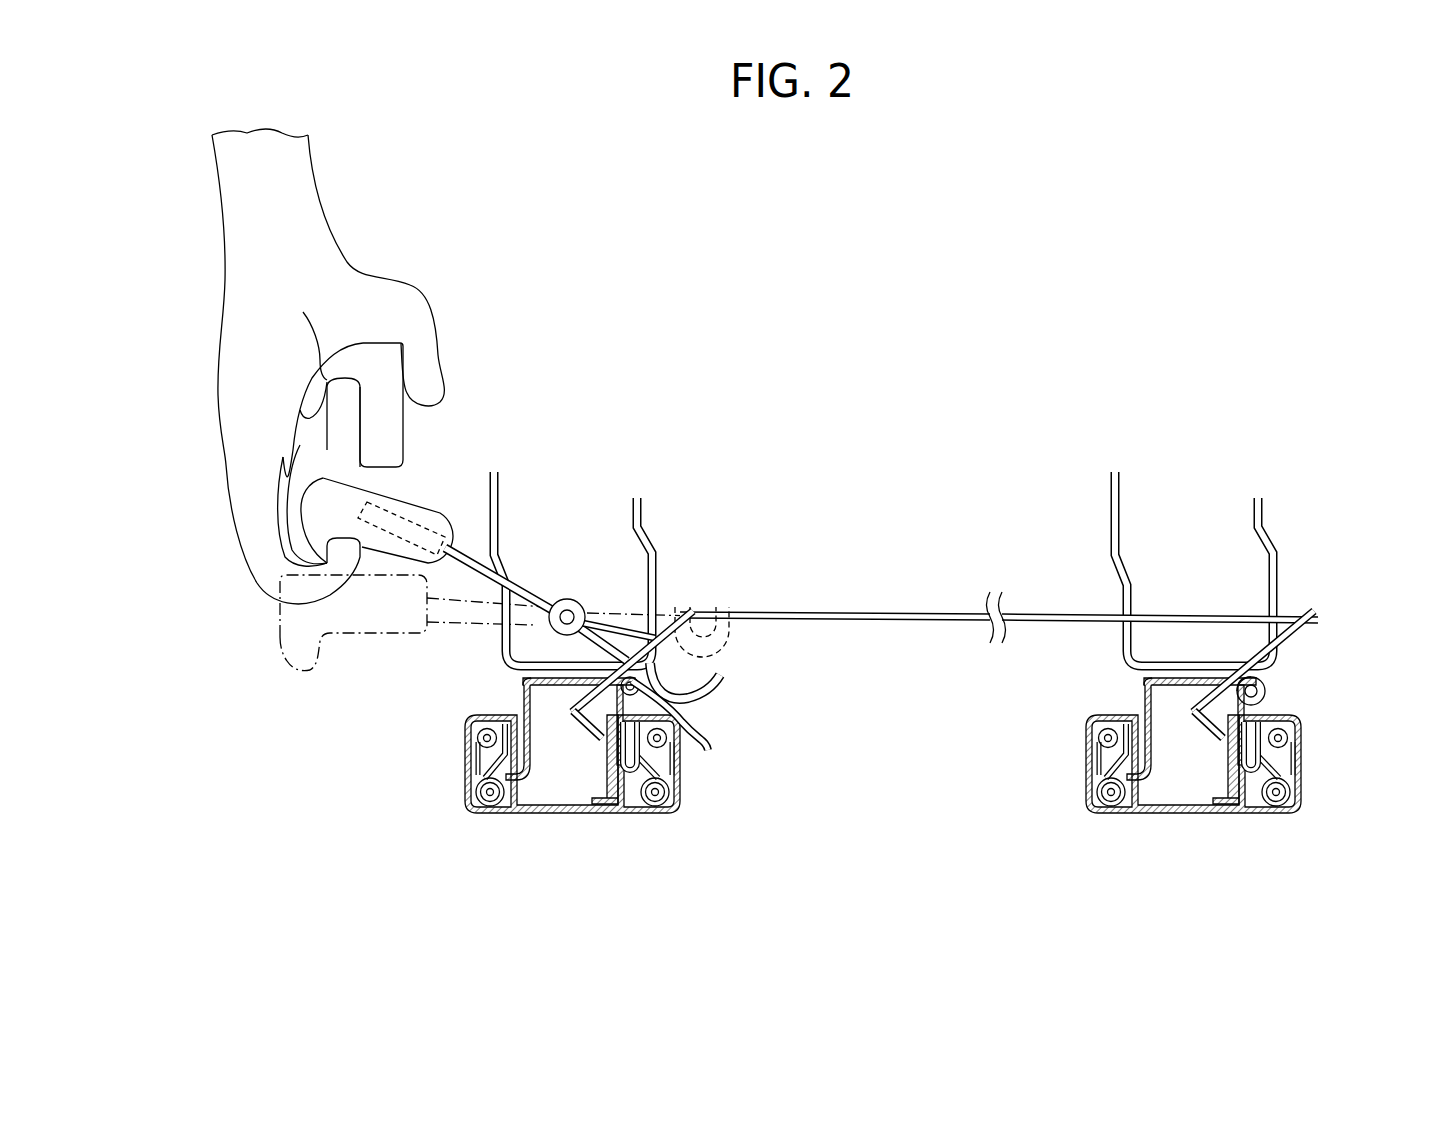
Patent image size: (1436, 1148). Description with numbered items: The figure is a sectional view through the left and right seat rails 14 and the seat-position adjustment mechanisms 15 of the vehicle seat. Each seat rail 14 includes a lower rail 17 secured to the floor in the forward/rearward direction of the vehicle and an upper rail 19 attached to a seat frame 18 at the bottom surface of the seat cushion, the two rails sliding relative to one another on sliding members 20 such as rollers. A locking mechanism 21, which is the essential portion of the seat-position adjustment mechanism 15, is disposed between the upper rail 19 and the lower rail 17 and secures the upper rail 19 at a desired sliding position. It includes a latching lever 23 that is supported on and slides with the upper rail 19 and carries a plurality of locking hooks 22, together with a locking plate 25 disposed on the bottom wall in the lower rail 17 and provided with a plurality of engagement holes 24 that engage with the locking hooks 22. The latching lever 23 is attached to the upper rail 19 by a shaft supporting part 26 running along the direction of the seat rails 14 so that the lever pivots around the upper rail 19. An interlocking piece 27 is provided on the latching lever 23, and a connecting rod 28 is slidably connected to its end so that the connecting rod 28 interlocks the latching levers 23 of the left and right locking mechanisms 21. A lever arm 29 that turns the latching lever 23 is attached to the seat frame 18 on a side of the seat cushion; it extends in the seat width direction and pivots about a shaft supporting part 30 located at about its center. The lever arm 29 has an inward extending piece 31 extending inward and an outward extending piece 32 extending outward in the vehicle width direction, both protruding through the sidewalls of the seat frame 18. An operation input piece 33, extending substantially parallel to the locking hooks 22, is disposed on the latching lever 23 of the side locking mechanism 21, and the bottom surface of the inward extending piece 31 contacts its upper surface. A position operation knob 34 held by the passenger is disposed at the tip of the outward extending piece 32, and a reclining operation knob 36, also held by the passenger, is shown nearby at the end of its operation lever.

The seat rail 14 is at (881, 817).
The seat-position adjustment mechanism 15 is at (897, 551).
The lower rail 17 is at (1134, 815).
The seat frame 18 is at (656, 537).
The upper rail 19 is at (1156, 770).
The sliding member 20 is at (1111, 814).
The locking mechanism 21 is at (925, 678).
The locking hook 22 is at (1221, 742).
The latching lever 23 is at (535, 718).
The engagement hole 24 is at (1261, 752).
The locking plate 25 is at (1248, 795).
The shaft supporting part 26 is at (688, 680).
The interlocking piece 27 is at (690, 606).
The connecting rod 28 is at (833, 613).
The lever arm 29 is at (531, 583).
The shaft supporting part 30 is at (570, 610).
The inward extending piece 31 is at (627, 633).
The outward extending piece 32 is at (470, 563).
The operation input piece 33 is at (711, 746).
The position operation knob 34 is at (449, 400).
The reclining operation knob 36 is at (400, 428).